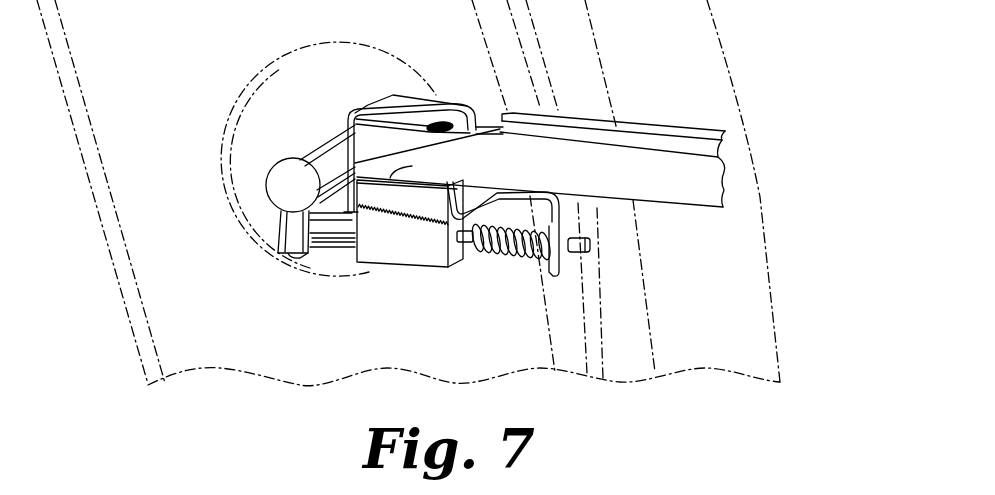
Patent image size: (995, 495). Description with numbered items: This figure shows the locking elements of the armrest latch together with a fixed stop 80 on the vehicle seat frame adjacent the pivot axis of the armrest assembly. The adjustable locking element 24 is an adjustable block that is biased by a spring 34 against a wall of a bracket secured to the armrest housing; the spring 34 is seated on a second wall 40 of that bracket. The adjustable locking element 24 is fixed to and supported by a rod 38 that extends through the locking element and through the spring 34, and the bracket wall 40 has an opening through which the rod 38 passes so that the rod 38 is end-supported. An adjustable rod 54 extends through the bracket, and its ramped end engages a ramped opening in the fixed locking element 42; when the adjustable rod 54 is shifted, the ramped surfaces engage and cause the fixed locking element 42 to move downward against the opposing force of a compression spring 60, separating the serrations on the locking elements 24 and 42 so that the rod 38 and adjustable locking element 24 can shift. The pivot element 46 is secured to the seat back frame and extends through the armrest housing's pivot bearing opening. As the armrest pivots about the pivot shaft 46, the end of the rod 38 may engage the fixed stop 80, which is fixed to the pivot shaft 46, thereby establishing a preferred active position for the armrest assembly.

The adjustable locking element 24 is at (412, 250).
The spring 34 is at (513, 260).
The rod 38 is at (333, 240).
The second wall of the bracket 40 is at (563, 263).
The fixed locking element 42 is at (387, 145).
The pivot element 46 is at (293, 187).
The adjustable rod 54 is at (676, 181).
The compression spring 60 is at (440, 122).
The fixed stop 80 is at (295, 256).